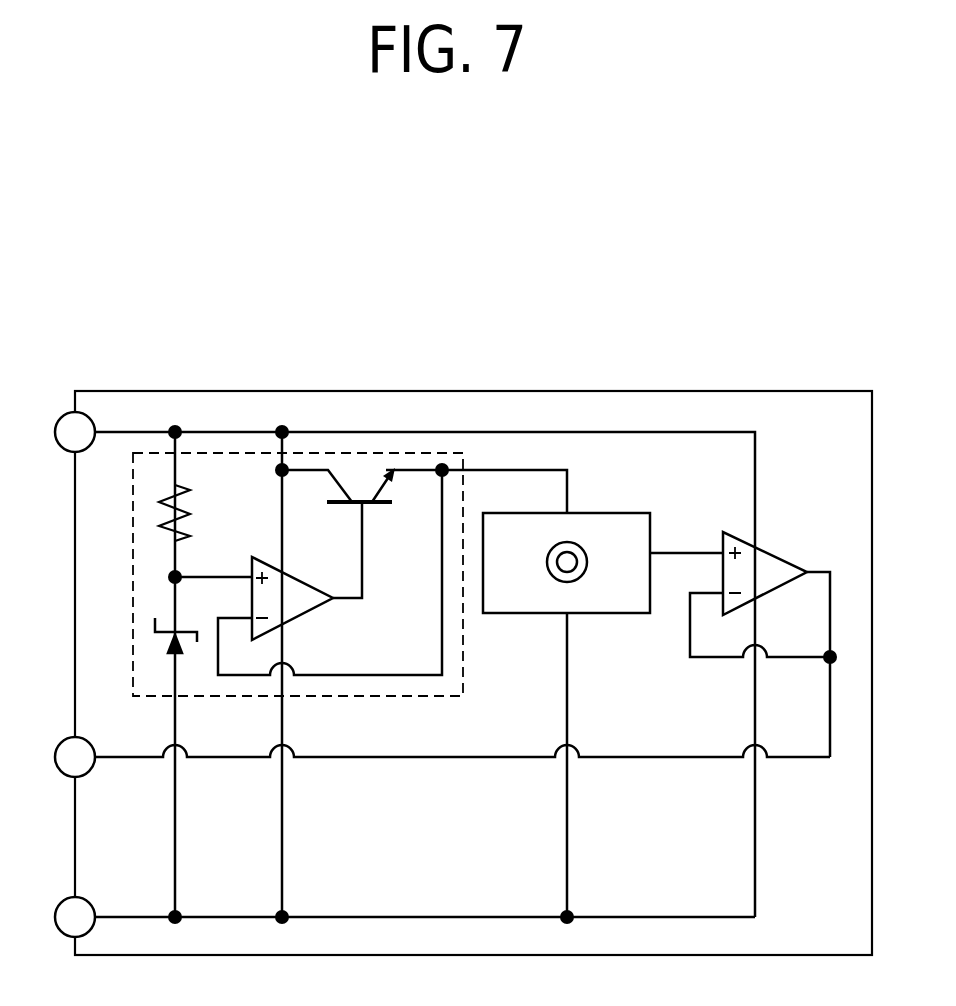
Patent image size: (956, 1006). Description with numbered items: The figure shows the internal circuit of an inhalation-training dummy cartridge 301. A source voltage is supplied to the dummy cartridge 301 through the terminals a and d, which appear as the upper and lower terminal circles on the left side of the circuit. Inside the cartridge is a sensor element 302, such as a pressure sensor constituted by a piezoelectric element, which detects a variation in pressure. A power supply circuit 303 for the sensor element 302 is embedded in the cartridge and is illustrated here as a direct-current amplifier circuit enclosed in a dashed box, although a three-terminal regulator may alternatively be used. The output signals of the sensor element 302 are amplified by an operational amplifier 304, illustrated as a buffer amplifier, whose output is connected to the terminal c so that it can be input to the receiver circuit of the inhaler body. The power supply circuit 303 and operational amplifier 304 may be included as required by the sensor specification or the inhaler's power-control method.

The inhalation-training dummy cartridge 301 is at (158, 392).
The sensor element 302 is at (613, 513).
The power supply circuit 303 is at (320, 453).
The operational amplifier 304 is at (777, 550).